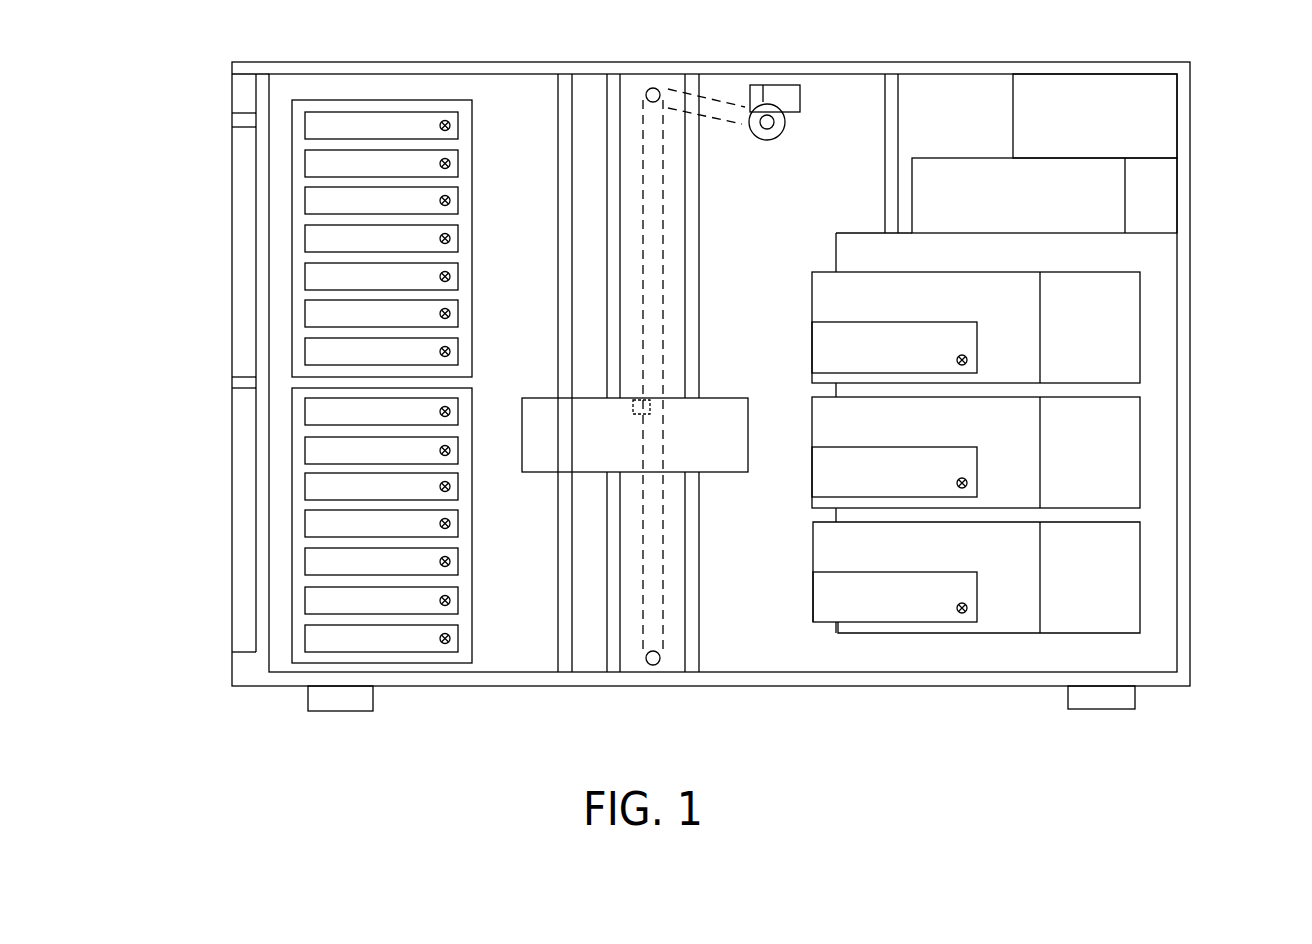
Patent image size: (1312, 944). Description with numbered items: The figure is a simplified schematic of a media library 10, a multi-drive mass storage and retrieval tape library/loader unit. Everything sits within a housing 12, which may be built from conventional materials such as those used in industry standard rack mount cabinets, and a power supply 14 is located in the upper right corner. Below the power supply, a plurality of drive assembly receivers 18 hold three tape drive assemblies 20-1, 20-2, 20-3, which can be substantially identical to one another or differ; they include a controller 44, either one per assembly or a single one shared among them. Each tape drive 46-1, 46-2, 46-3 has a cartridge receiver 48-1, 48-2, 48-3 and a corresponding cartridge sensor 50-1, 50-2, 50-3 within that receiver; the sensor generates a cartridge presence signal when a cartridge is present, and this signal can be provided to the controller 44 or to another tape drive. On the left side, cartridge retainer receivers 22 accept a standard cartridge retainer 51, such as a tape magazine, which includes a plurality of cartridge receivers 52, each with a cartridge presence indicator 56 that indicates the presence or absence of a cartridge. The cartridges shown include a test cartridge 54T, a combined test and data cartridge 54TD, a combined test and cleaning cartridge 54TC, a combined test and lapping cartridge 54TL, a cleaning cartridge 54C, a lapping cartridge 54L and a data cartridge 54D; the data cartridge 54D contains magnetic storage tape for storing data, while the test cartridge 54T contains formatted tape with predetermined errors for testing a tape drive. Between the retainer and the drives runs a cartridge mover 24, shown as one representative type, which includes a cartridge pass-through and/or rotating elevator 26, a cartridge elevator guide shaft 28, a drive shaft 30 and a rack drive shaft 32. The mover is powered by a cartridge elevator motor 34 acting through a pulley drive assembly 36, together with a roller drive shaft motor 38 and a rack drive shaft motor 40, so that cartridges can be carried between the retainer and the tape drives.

The media library 10 is at (216, 445).
The housing 12 is at (903, 60).
The power supply 14 is at (1153, 141).
The drive assembly receiver 18 is at (1140, 308).
The tape drive assembly 20-1 is at (1078, 328).
The tape drive assembly 20-2 is at (1081, 449).
The tape drive assembly 20-3 is at (1080, 563).
The cartridge retainer receiver 22 is at (474, 663).
The cartridge mover 24 is at (720, 540).
The elevator 26 is at (730, 476).
The cartridge elevator guide shaft 28 is at (607, 268).
The drive shaft 30 is at (558, 232).
The rack drive shaft 32 is at (703, 279).
The cartridge elevator motor 34 is at (758, 140).
The pulley drive assembly 36 is at (646, 92).
The roller drive shaft motor 38 is at (800, 95).
The rack drive shaft motor 40 is at (751, 106).
The controller 44 is at (930, 217).
The tape drive 46-1 is at (1020, 335).
The tape drive 46-2 is at (1020, 457).
The tape drive 46-3 is at (1020, 583).
The cartridge receiver 48-1 is at (862, 322).
The cartridge receiver 48-2 is at (864, 447).
The cartridge receiver 48-3 is at (866, 572).
The cartridge sensor 50-1 is at (977, 362).
The cartridge sensor 50-2 is at (977, 485).
The cartridge sensor 50-3 is at (977, 610).
The cartridge retainer 51 is at (463, 582).
The cartridge receiver 52 is at (453, 625).
The test cartridge 54T is at (450, 159).
The combined test and data cartridge 54TD is at (450, 196).
The combined test and cleaning cartridge 54TC is at (450, 311).
The combined test and lapping cartridge 54TL is at (450, 349).
The cleaning cartridge 54C is at (450, 486).
The lapping cartridge 54L is at (451, 523).
The data cartridge 54D is at (451, 560).
The cartridge presence indicator 56 is at (452, 637).